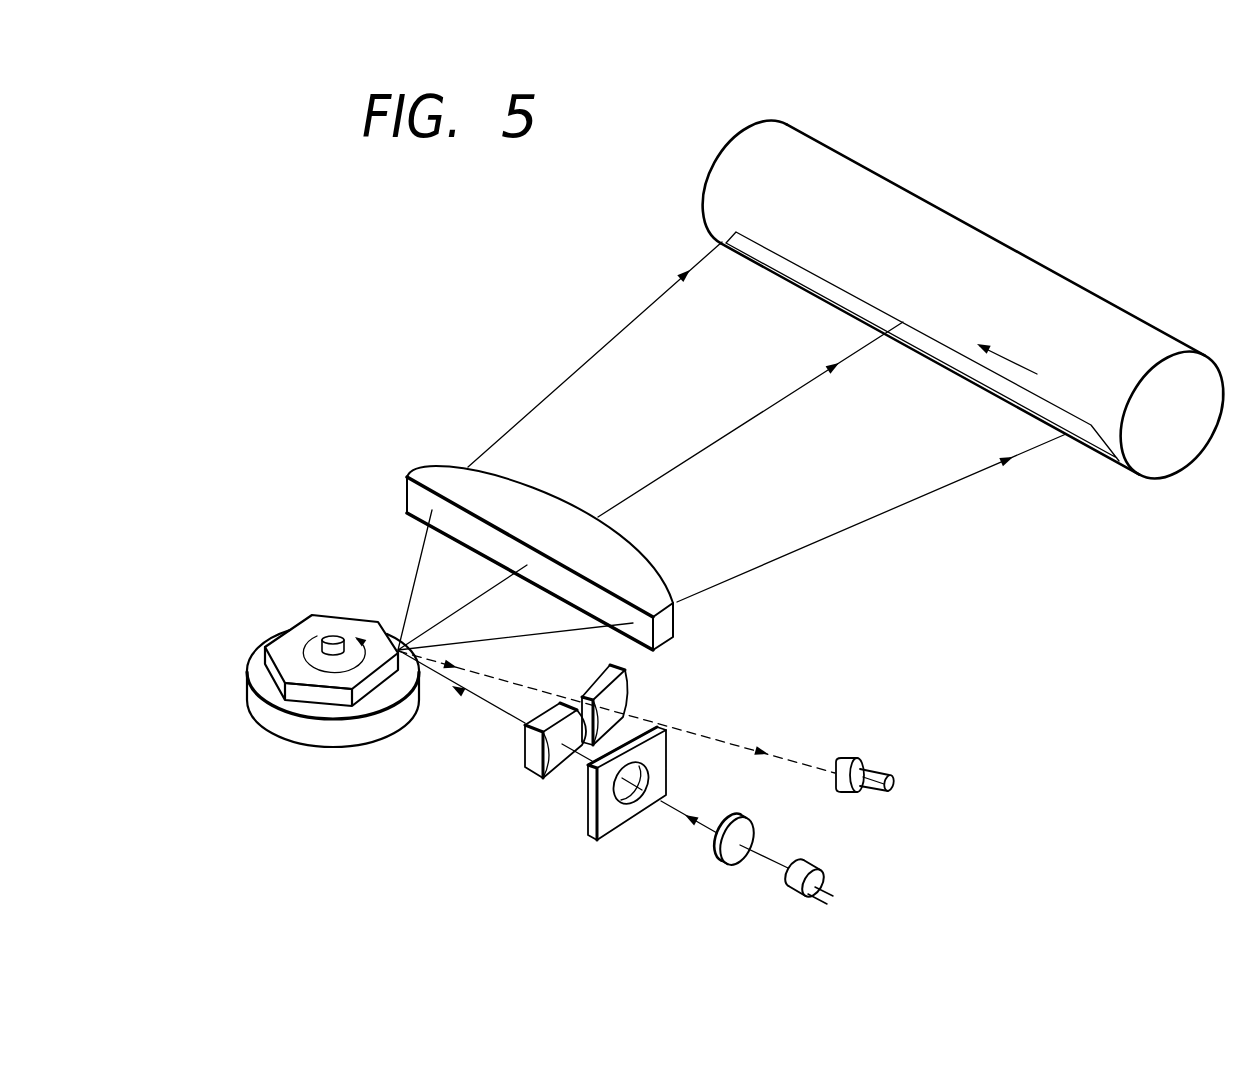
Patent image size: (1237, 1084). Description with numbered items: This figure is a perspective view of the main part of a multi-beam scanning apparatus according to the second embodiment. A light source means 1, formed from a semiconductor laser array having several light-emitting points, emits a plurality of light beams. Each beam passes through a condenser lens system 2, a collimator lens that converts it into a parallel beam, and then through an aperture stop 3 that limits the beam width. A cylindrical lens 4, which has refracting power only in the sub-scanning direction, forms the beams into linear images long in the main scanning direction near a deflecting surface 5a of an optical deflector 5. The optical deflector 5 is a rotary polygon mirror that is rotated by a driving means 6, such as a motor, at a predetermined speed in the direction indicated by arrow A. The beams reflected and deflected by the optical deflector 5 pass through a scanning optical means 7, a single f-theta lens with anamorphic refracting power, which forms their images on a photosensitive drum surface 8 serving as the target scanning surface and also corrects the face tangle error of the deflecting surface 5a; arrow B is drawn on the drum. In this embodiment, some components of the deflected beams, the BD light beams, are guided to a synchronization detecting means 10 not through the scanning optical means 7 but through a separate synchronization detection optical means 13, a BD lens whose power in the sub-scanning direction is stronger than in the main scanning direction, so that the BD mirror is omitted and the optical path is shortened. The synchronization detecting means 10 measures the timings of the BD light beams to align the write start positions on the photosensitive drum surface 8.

The light source means 1 is at (788, 887).
The condenser lens system 2 is at (718, 857).
The aperture stop 3 is at (603, 793).
The cylindrical lens 4 is at (530, 748).
The synchronization detection optical means 13 is at (618, 695).
The optical deflector 5 is at (293, 633).
The deflecting surface 5a is at (305, 697).
The driving means 6 is at (330, 737).
The scanning optical means 7 is at (428, 473).
The photosensitive drum surface 8 is at (952, 221).
The synchronization detecting means 10 is at (896, 782).
The arrow A is at (344, 653).
The arrow B is at (1007, 348).